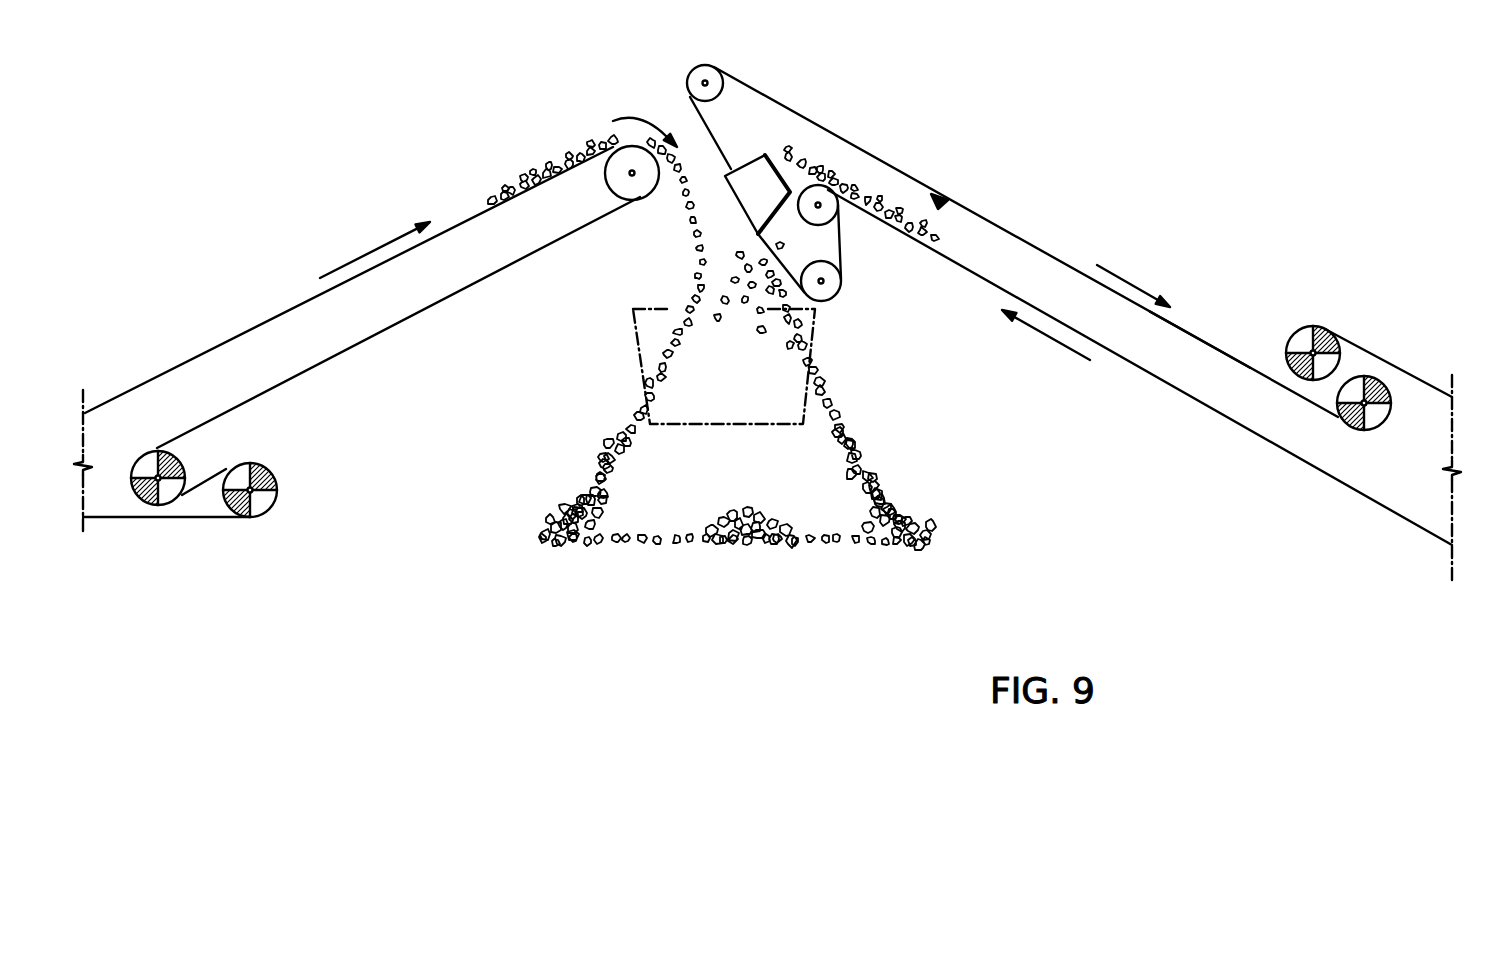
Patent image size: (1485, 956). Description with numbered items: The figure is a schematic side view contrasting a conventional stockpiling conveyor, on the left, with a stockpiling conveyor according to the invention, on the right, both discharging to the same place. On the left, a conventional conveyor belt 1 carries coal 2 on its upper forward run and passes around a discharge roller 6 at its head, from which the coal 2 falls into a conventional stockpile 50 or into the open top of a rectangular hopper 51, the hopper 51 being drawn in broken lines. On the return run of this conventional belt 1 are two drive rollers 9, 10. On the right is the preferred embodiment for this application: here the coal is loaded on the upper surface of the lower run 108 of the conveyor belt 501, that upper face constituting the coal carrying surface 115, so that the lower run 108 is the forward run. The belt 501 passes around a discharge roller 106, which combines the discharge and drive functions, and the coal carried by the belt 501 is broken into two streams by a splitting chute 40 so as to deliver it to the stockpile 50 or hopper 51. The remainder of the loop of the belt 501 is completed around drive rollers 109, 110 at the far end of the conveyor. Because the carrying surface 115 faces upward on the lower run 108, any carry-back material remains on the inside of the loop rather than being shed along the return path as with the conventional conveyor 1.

The conveyor belt 1 is at (263, 323).
The coal 2 is at (563, 160).
The discharge roller 6 is at (632, 182).
The drive roller 9 is at (143, 462).
The drive roller 10 is at (267, 507).
The splitting chute 40 is at (760, 167).
The stockpile 50 is at (905, 503).
The rectangular hopper 51 is at (640, 358).
The discharge roller 106 is at (828, 210).
The lower run 108 is at (978, 275).
The drive roller 109 is at (1332, 358).
The drive roller 110 is at (1378, 415).
The coal carrying surface 115 is at (932, 203).
The conveyor belt 501 is at (1220, 352).